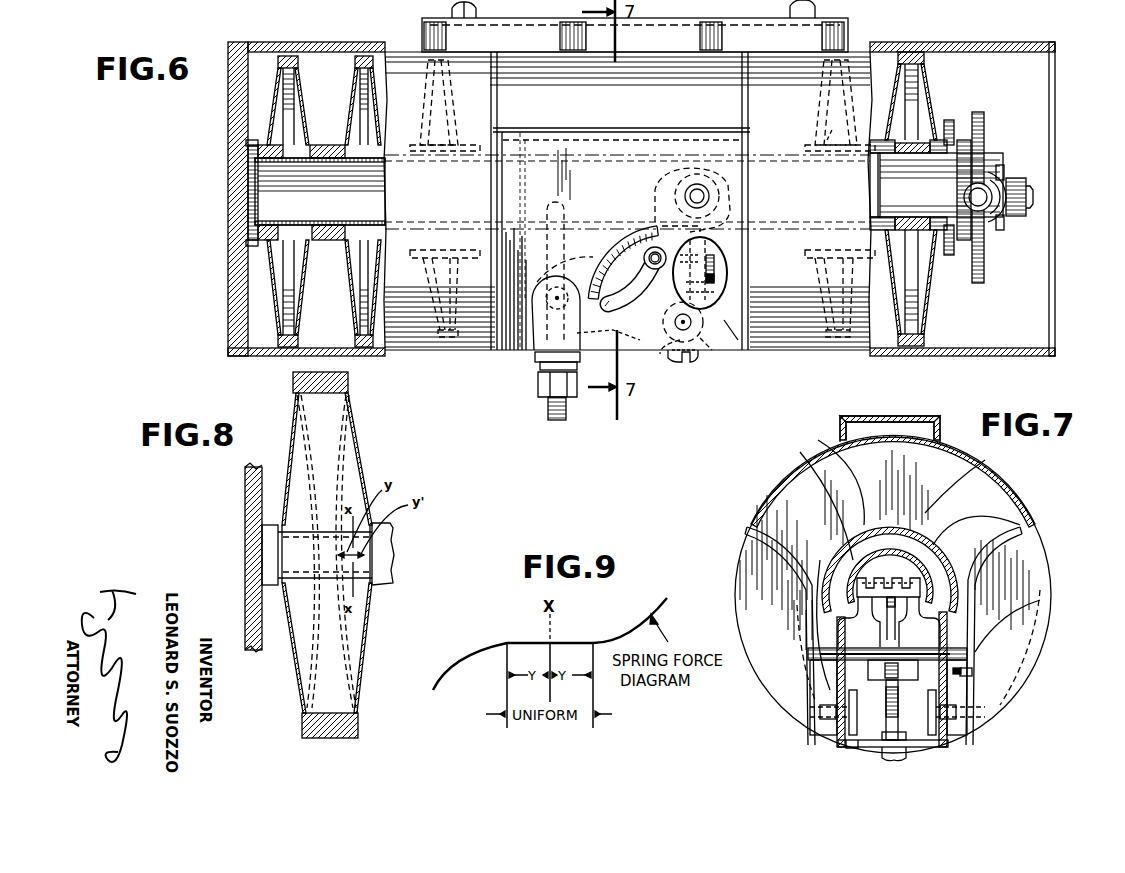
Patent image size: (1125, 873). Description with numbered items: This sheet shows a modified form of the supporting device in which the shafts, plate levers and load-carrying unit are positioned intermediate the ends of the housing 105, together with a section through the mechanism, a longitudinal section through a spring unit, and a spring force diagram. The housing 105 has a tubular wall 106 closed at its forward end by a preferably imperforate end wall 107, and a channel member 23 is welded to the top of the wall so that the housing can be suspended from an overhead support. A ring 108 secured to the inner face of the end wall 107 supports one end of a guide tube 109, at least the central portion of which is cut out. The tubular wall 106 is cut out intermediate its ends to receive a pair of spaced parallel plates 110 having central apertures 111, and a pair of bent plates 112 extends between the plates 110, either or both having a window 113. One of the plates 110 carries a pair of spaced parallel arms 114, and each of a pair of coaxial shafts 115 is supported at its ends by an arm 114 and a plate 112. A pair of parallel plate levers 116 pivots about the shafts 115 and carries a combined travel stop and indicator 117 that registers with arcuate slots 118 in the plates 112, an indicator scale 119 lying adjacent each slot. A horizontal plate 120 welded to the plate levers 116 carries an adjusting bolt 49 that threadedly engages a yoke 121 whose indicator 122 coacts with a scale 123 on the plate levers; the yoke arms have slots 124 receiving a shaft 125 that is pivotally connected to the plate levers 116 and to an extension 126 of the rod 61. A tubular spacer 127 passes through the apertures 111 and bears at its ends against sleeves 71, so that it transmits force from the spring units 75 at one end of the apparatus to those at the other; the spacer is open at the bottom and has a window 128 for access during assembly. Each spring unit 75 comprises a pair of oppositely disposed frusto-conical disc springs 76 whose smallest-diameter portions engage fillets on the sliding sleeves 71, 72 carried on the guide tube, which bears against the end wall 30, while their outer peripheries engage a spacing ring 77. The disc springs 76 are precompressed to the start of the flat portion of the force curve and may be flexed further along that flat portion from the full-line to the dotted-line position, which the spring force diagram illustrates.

In FIG. 6, the channel member 23 is at (838, 30).
In FIG. 7, the channel member 23 is at (912, 418).
In FIG. 8, the end wall 30 is at (245, 488).
In FIG. 7, the adjusting bolt 49 is at (890, 722).
In FIG. 6, the rod 61 is at (830, 129).
In FIG. 6, the sliding sleeve 71 is at (802, 138).
In FIG. 8, the sliding sleeve 71 is at (268, 542).
In FIG. 8, the sliding sleeve 72 is at (388, 570).
In FIG. 6, the spring unit 75 is at (272, 110).
In FIG. 8, the spring unit 75 is at (368, 433).
In FIG. 8, the disc spring 76 is at (292, 435).
In FIG. 8, the spacing ring 77 is at (348, 380).
In FIG. 6, the housing 105 is at (284, 42).
In FIG. 6, the tubular wall 106 is at (338, 42).
In FIG. 7, the tubular wall 106 is at (988, 476).
In FIG. 6, the end wall 107 is at (228, 120).
In FIG. 6, the ring 108 is at (255, 232).
In FIG. 6, the guide tube 109 is at (268, 185).
In FIG. 7, the guide tube 109 is at (930, 572).
In FIG. 6, the plate 110 is at (497, 200).
In FIG. 7, the plate 110 is at (758, 603).
In FIG. 7, the central aperture 111 is at (850, 535).
In FIG. 7, the bent plate 112 is at (837, 620).
In FIG. 6, the window 113 is at (727, 267).
In FIG. 6, the arm 114 is at (738, 352).
In FIG. 7, the arm 114 is at (852, 732).
In FIG. 6, the shaft 115 is at (690, 330).
In FIG. 7, the shaft 115 is at (830, 712).
In FIG. 6, the plate lever 116 is at (670, 345).
In FIG. 7, the plate lever 116 is at (838, 680).
In FIG. 6, the combined travel stop and indicator 117 is at (654, 266).
In FIG. 7, the combined travel stop and indicator 117 is at (973, 652).
In FIG. 6, the arcuate slot 118 is at (614, 307).
In FIG. 6, the indicator scale 119 is at (602, 258).
In FIG. 7, the horizontal plate 120 is at (855, 745).
In FIG. 7, the yoke 121 is at (870, 632).
In FIG. 6, the indicator 122 is at (716, 268).
In FIG. 7, the indicator 122 is at (963, 672).
In FIG. 6, the scale 123 is at (712, 284).
In FIG. 6, the slot 124 is at (656, 201).
In FIG. 6, the shaft 125 is at (692, 183).
In FIG. 7, the shaft 125 is at (855, 595).
In FIG. 7, the extension 126 is at (895, 573).
In FIG. 6, the tubular spacer 127 is at (558, 118).
In FIG. 7, the tubular spacer 127 is at (848, 572).
In FIG. 6, the window 128 is at (648, 140).